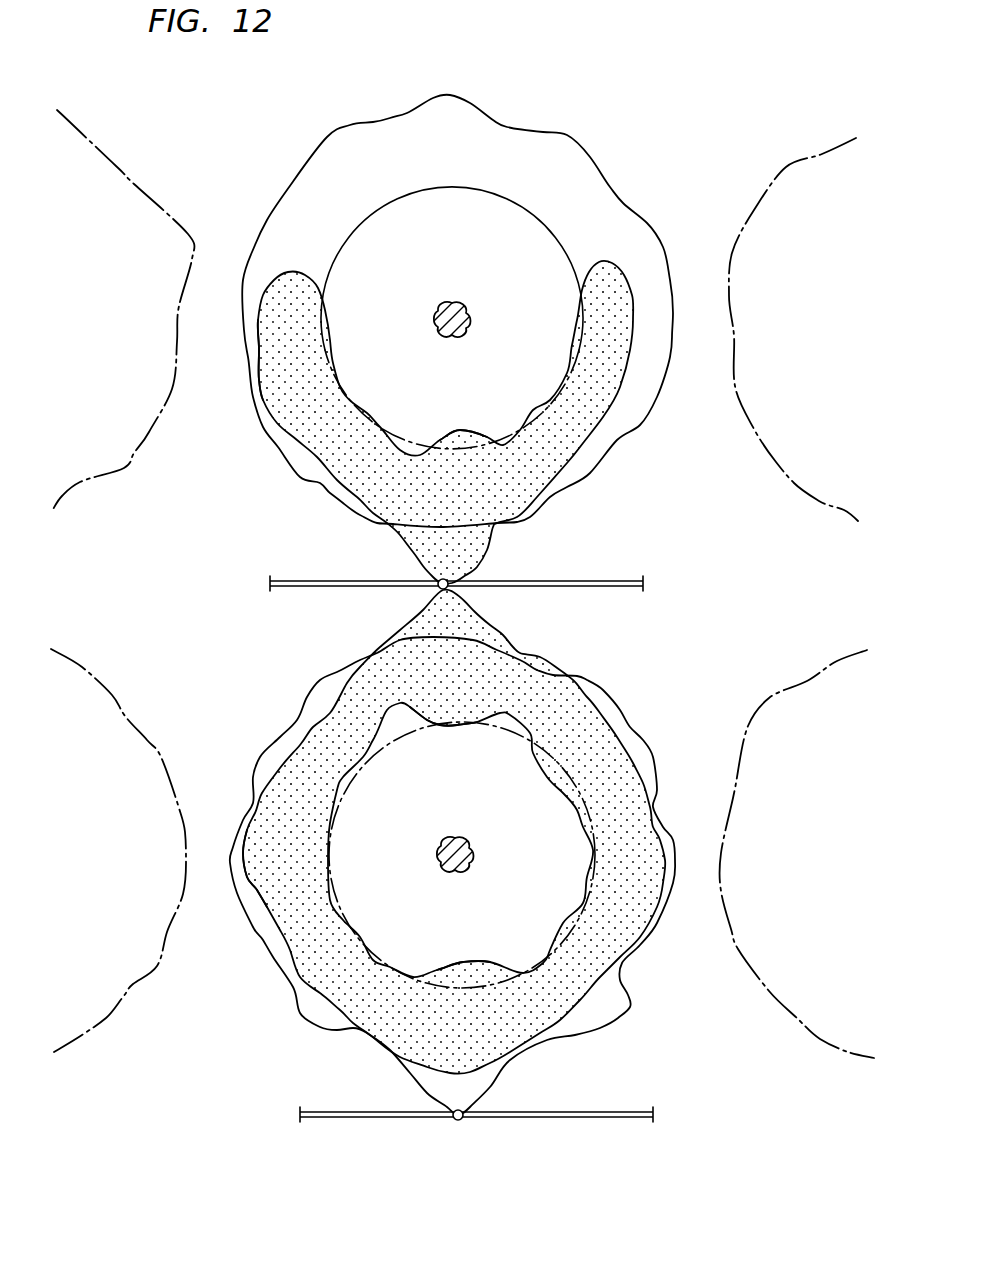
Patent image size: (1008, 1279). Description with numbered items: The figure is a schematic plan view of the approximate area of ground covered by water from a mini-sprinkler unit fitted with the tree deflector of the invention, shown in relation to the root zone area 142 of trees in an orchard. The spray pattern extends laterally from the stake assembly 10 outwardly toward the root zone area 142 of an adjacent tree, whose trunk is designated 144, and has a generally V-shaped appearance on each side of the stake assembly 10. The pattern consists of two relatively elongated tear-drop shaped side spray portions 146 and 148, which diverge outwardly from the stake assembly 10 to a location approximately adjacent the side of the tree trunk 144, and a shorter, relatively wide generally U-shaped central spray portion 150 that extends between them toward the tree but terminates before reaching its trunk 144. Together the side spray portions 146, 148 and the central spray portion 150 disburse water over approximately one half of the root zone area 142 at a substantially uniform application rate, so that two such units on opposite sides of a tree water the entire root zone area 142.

The stake assembly 10 is at (471, 579).
The root zone area 142 is at (593, 183).
The tree trunk 144 is at (461, 311).
The tear-drop shaped side spray portion 146 is at (603, 385).
The tear-drop shaped side spray portion 148 is at (273, 388).
The U-shaped central spray portion 150 is at (460, 437).